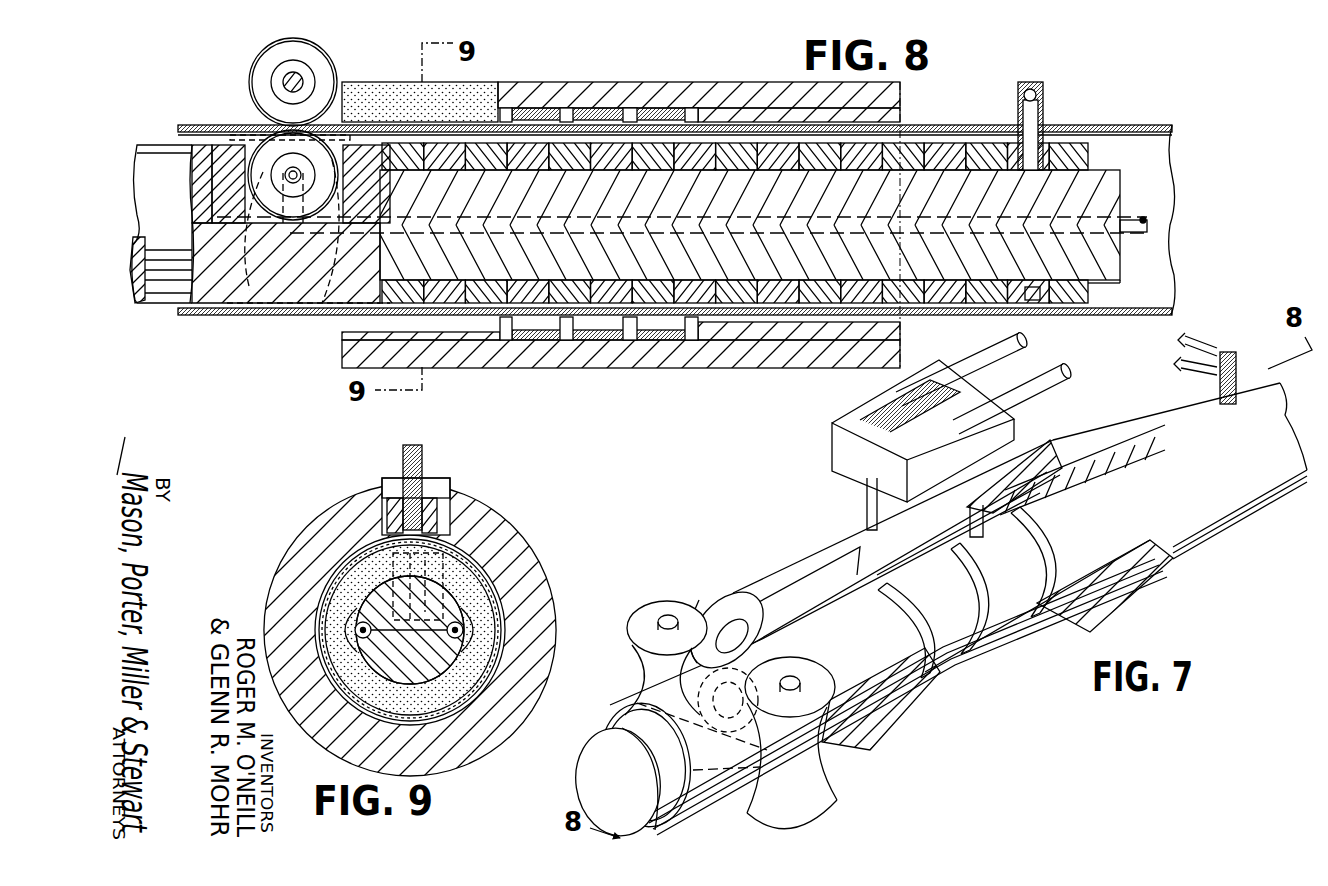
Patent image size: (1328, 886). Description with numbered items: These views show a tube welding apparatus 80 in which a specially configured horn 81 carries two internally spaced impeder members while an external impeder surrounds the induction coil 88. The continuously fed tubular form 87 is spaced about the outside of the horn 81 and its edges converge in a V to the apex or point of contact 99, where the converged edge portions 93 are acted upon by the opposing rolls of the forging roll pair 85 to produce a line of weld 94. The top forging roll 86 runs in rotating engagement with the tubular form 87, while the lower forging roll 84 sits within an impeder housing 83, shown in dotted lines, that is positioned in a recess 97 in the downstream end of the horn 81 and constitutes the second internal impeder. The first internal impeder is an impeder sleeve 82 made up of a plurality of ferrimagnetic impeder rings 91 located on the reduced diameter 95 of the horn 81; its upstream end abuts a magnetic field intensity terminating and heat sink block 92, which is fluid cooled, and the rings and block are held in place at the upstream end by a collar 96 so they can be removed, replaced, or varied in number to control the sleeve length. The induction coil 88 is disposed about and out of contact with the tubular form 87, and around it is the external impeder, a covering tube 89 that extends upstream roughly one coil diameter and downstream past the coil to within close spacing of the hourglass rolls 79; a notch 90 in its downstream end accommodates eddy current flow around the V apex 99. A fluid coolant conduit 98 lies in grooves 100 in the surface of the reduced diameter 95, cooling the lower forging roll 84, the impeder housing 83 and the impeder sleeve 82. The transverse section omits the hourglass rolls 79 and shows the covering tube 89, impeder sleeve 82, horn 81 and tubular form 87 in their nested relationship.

In FIG. 8, the hourglass rolls 79 is at (240, 307).
In FIG. 7, the hourglass rolls 79 is at (632, 625).
In FIG. 7, the tube welding apparatus 80 is at (1113, 625).
In FIG. 8, the horn 81 is at (1123, 183).
In FIG. 9, the horn 81 is at (437, 690).
In FIG. 7, the horn 81 is at (588, 761).
In FIG. 8, the impeder sleeve 82 is at (773, 297).
In FIG. 9, the impeder sleeve 82 is at (460, 570).
In FIG. 7, the impeder sleeve 82 is at (1185, 423).
In FIG. 8, the impeder housing 83 is at (220, 143).
In FIG. 7, the impeder housing 83 is at (718, 770).
In FIG. 8, the lower forging roll 84 is at (250, 146).
In FIG. 7, the lower forging roll 84 is at (789, 757).
In FIG. 9, the forging roll pair 85 is at (395, 460).
In FIG. 7, the forging roll pair 85 is at (724, 587).
In FIG. 8, the top forging roll 86 is at (275, 53).
In FIG. 7, the top forging roll 86 is at (727, 608).
In FIG. 8, the tubular form 87 is at (1147, 143).
In FIG. 9, the tubular form 87 is at (340, 552).
In FIG. 7, the tubular form 87 is at (625, 703).
In FIG. 8, the induction coil 88 is at (543, 337).
In FIG. 7, the induction coil 88 is at (951, 669).
In FIG. 8, the covering tube 89 is at (630, 87).
In FIG. 9, the covering tube 89 is at (500, 557).
In FIG. 7, the covering tube 89 is at (903, 737).
In FIG. 8, the notch 90 is at (363, 87).
In FIG. 7, the notch 90 is at (787, 595).
In FIG. 8, the impeder rings 91 is at (940, 147).
In FIG. 7, the impeder rings 91 is at (1145, 455).
In FIG. 8, the terminating block 92 is at (1045, 98).
In FIG. 7, the terminating block 92 is at (1225, 352).
In FIG. 8, the converged edge portions 93 is at (917, 147).
In FIG. 9, the converged edge portions 93 is at (387, 527).
In FIG. 7, the converged edge portions 93 is at (1116, 437).
In FIG. 8, the line of weld 94 is at (178, 130).
In FIG. 7, the line of weld 94 is at (618, 782).
In FIG. 8, the reduced diameter 95 is at (960, 170).
In FIG. 9, the reduced diameter 95 is at (517, 587).
In FIG. 8, the collar 96 is at (1080, 147).
In FIG. 7, the collar 96 is at (1250, 387).
In FIG. 8, the recess 97 is at (245, 212).
In FIG. 8, the fluid coolant conduit 98 is at (1133, 215).
In FIG. 9, the fluid coolant conduit 98 is at (363, 625).
In FIG. 8, the V apex 99 is at (347, 130).
In FIG. 9, the V apex 99 is at (420, 530).
In FIG. 9, the grooves 100 is at (447, 673).